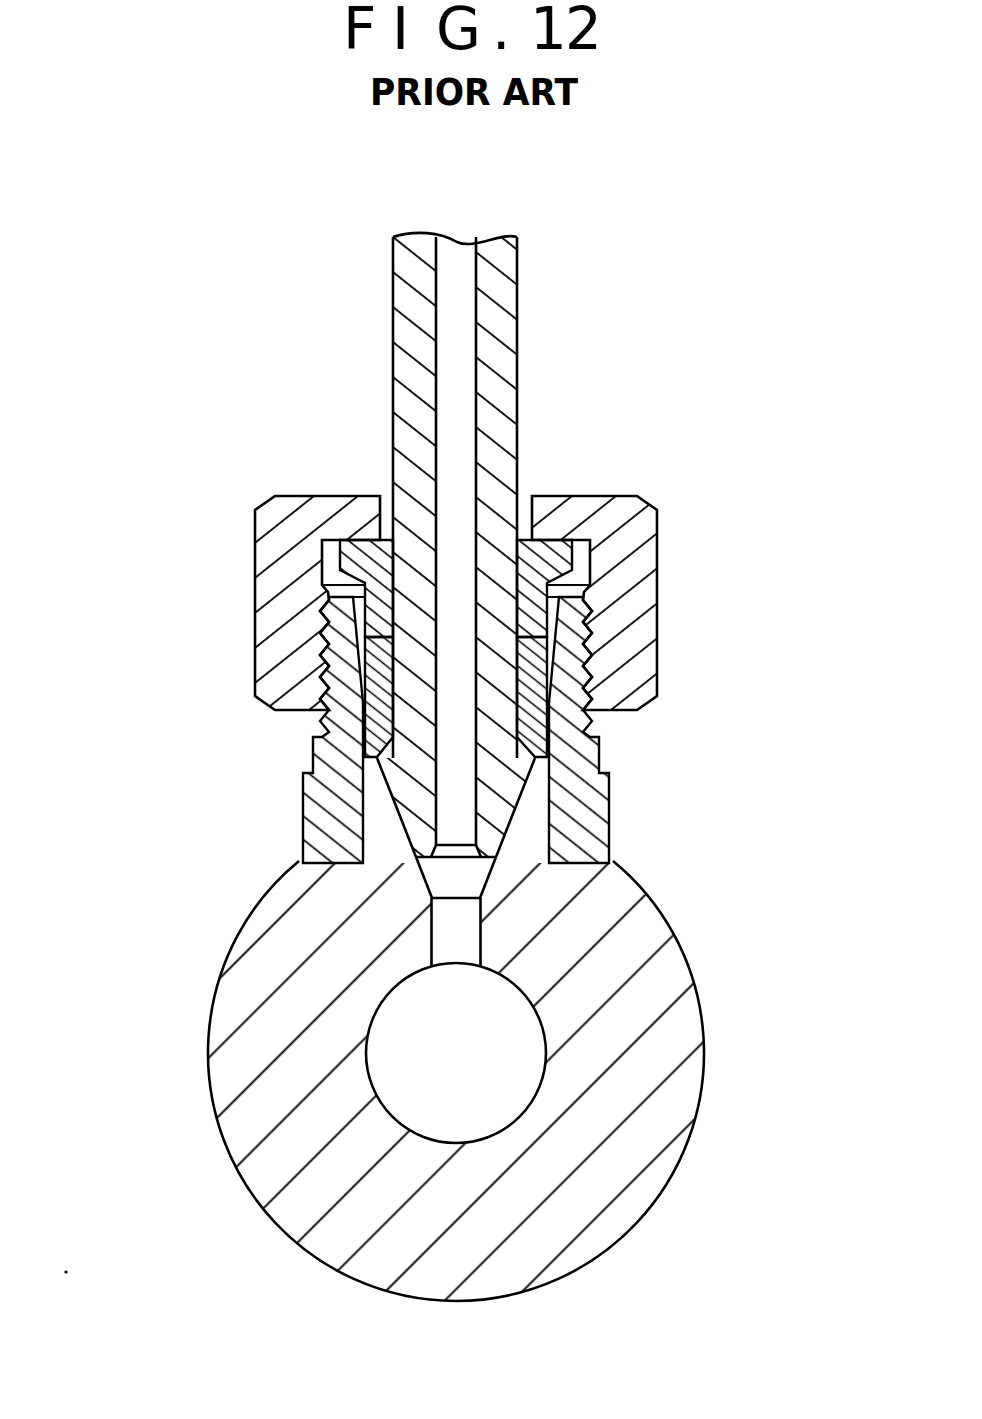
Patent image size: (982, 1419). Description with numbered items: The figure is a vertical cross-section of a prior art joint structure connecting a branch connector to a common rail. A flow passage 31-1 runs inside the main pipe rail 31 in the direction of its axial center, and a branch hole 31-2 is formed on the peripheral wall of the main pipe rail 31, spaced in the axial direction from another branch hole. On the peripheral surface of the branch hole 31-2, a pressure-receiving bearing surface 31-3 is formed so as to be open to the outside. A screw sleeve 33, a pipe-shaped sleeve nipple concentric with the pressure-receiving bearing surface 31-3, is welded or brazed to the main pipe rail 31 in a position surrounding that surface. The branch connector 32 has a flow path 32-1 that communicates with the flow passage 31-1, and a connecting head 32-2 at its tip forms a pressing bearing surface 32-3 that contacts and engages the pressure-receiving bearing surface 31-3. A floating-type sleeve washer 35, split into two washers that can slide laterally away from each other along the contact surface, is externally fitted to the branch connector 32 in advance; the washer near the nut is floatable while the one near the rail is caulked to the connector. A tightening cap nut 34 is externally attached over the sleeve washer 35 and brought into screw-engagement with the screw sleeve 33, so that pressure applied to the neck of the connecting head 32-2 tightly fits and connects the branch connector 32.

The main pipe rail 31 is at (690, 967).
The flow passage 31-1 is at (532, 1050).
The branch hole 31-2 is at (473, 922).
The pressure-receiving bearing surface 31-3 is at (482, 873).
The branch connector 32 is at (512, 441).
The flow path 32-1 is at (460, 250).
The connecting head 32-2 is at (381, 792).
The pressing bearing surface 32-3 is at (377, 821).
The screw sleeve 33 is at (607, 808).
The tightening cap nut 34 is at (643, 598).
The sleeve washer 35 is at (572, 557).